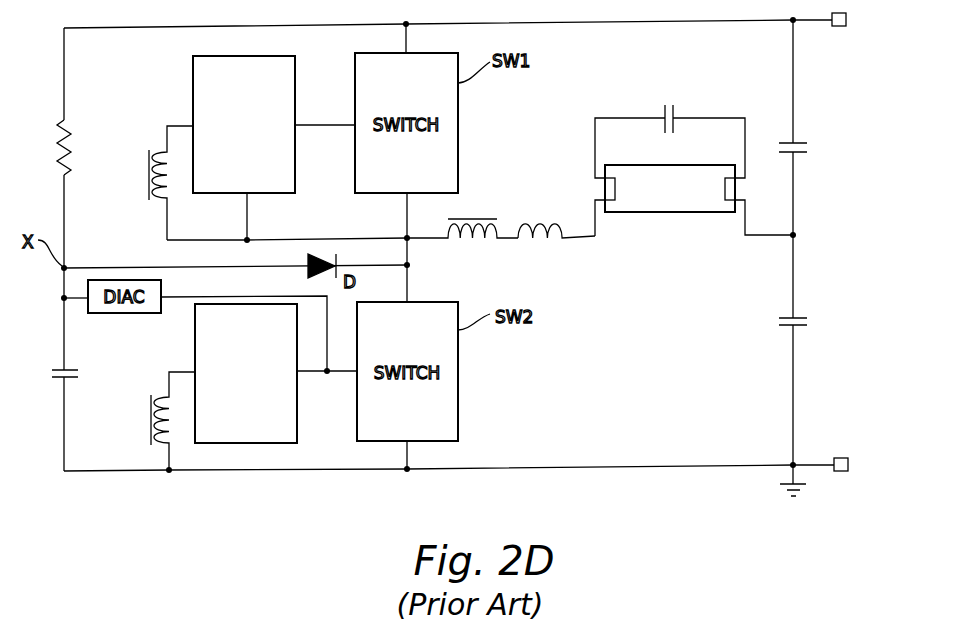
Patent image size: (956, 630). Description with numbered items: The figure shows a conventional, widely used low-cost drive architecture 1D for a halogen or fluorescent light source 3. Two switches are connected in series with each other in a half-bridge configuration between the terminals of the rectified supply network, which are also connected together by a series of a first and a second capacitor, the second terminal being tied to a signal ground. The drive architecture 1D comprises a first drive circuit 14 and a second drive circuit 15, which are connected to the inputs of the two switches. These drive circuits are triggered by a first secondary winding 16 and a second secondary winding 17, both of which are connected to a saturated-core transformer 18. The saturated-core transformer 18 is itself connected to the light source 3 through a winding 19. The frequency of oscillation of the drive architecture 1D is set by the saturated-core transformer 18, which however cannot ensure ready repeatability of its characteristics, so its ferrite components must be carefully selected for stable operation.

The drive architecture 1D is at (848, 367).
The first drive circuit 14 is at (295, 80).
The second drive circuit 15 is at (298, 400).
The first secondary winding 16 is at (153, 142).
The second secondary winding 17 is at (153, 392).
The saturated-core transformer 18 is at (470, 219).
The winding 19 is at (560, 218).
The light source 3 is at (670, 212).